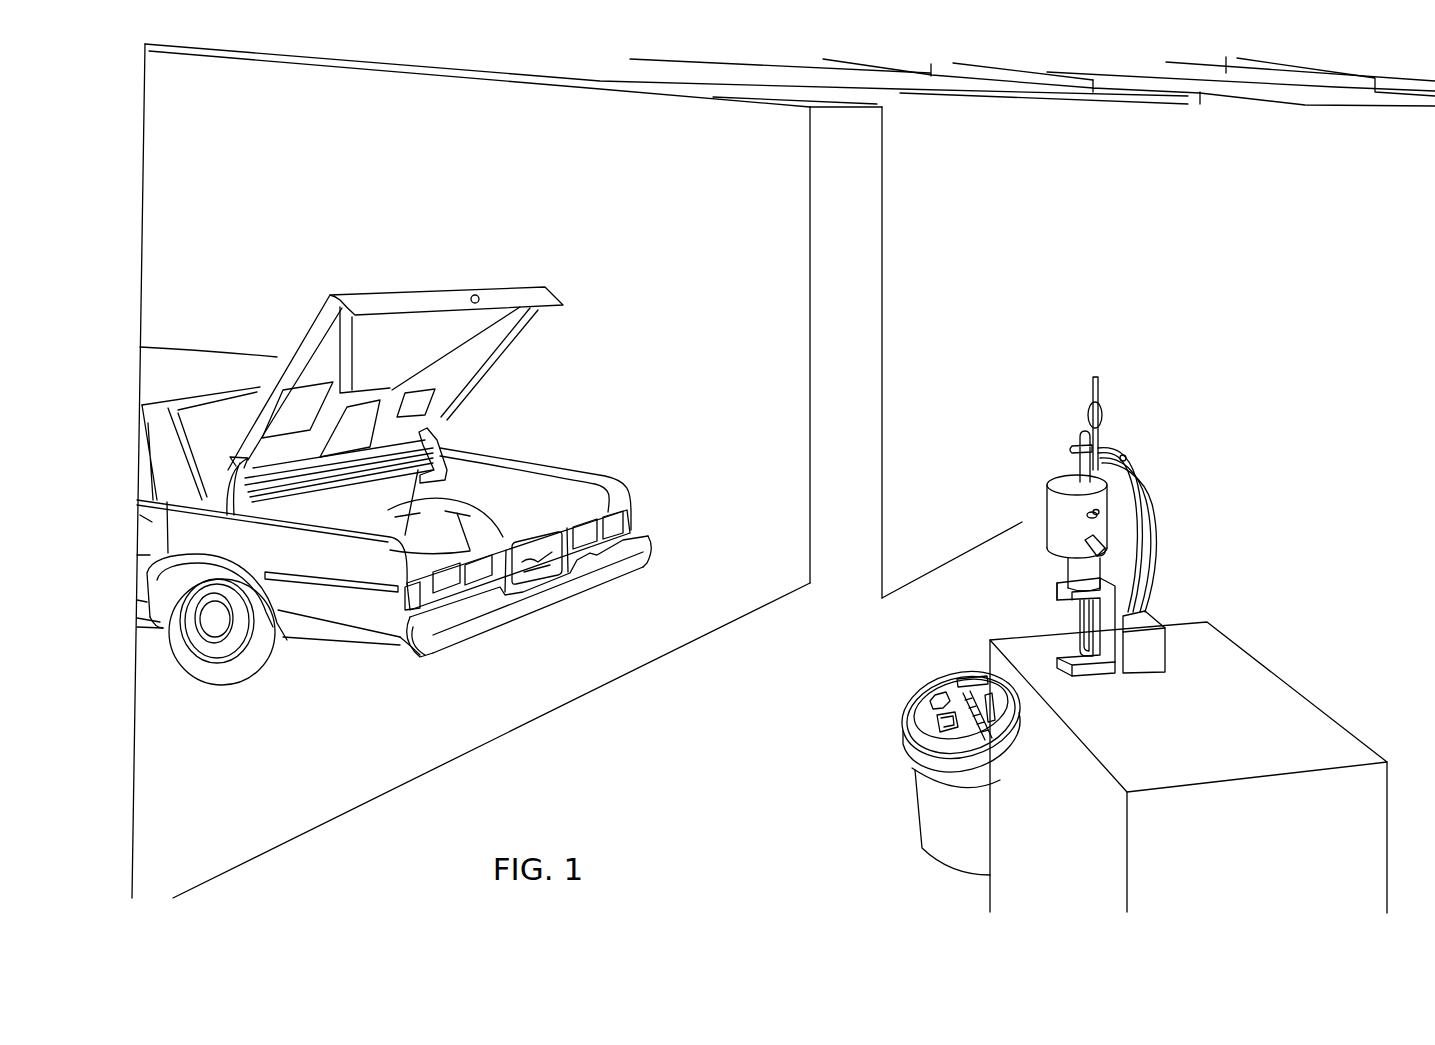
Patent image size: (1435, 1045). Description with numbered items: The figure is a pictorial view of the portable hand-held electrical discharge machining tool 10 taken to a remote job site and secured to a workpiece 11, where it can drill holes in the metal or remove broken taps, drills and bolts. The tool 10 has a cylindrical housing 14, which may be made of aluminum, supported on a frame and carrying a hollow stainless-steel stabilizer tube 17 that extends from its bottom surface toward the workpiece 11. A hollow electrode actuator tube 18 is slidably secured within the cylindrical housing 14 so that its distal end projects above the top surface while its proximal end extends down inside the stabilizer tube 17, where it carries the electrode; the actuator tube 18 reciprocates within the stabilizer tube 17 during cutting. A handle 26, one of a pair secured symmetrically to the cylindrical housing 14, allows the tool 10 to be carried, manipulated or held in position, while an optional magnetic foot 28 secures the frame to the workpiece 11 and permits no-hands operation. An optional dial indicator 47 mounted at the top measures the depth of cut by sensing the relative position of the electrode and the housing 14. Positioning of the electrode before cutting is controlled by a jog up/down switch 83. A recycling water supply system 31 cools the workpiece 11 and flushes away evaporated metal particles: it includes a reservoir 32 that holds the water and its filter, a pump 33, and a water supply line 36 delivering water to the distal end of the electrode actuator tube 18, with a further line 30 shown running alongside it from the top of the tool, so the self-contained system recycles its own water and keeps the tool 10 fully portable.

The electrical discharge machining (EDM) tool 10 is at (1114, 550).
The workpiece 11 is at (1083, 687).
The cylindrical housing 14 is at (1055, 516).
The stabilizer tube 17 is at (1075, 572).
The electrode actuator tube 18 is at (1080, 465).
The handle 26 is at (1088, 542).
The magnetic foot 28 is at (1160, 657).
The hose 30 is at (1125, 448).
The recycling water supply system 31 is at (943, 764).
The reservoir 32 is at (928, 803).
The pump 33 is at (935, 712).
The water supply line 36 is at (1152, 507).
The dial indicator 47 is at (1102, 413).
The jog up/down switch 83 is at (1088, 517).